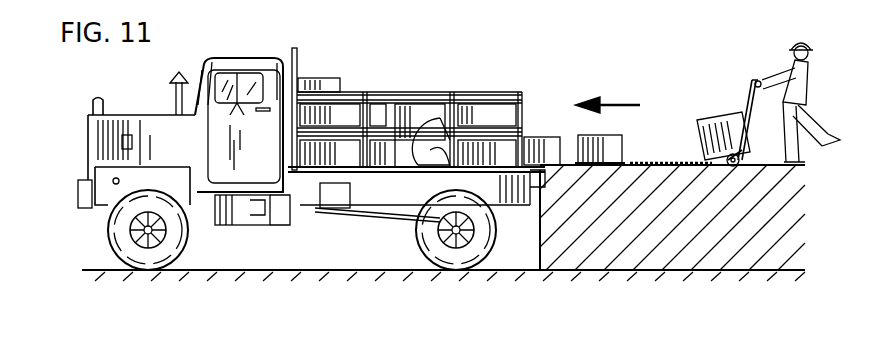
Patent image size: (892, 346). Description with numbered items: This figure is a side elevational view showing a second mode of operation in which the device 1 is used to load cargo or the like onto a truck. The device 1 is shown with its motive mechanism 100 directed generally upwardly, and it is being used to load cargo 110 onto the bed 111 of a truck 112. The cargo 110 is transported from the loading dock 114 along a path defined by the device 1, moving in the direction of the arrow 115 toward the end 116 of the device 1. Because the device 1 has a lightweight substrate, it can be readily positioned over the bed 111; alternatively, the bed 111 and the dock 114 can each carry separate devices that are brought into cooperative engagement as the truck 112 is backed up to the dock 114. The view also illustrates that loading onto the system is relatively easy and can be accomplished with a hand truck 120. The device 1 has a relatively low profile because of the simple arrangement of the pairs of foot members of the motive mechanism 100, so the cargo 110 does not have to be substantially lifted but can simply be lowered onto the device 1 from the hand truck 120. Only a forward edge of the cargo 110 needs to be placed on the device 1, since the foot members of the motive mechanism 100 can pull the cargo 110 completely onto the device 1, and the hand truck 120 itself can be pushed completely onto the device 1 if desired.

The device 1 is at (666, 148).
The motive mechanism 100 is at (453, 132).
The cargo 110 is at (533, 137).
The bed 111 is at (402, 137).
The truck 112 is at (255, 59).
The loading dock 114 is at (786, 167).
The arrow 115 is at (618, 103).
The end 116 is at (416, 163).
The hand truck 120 is at (750, 103).